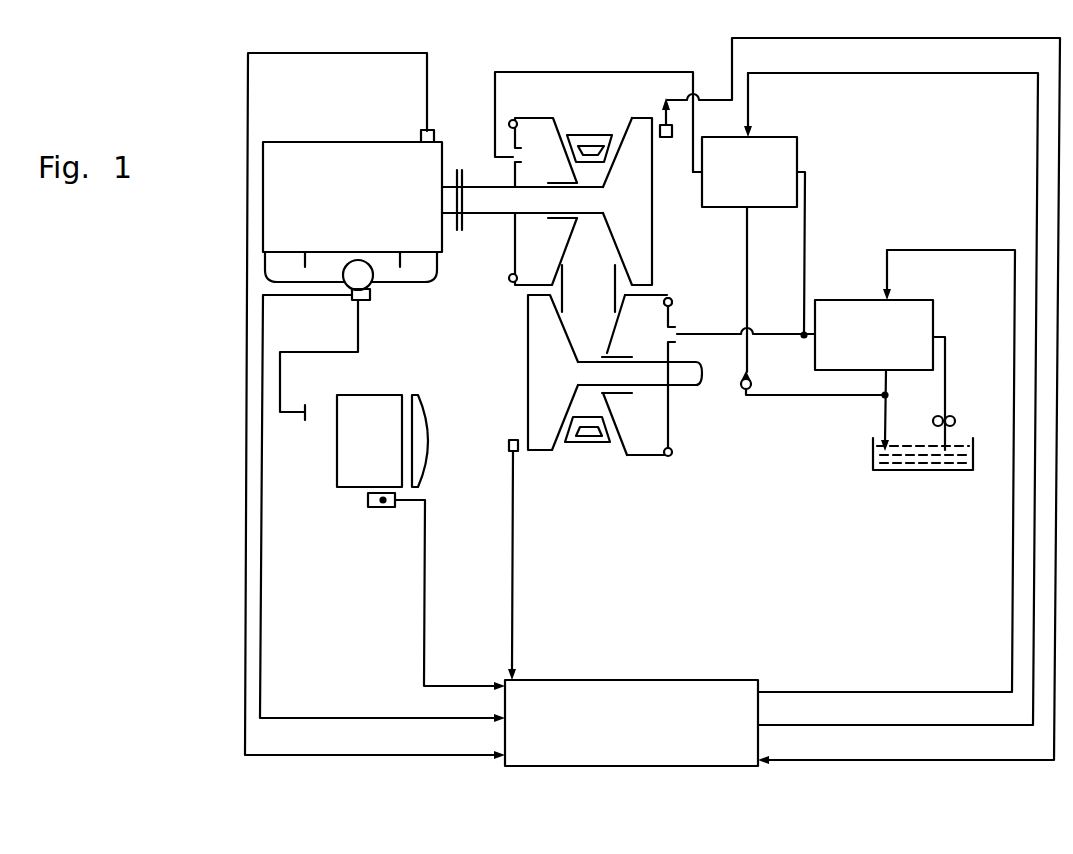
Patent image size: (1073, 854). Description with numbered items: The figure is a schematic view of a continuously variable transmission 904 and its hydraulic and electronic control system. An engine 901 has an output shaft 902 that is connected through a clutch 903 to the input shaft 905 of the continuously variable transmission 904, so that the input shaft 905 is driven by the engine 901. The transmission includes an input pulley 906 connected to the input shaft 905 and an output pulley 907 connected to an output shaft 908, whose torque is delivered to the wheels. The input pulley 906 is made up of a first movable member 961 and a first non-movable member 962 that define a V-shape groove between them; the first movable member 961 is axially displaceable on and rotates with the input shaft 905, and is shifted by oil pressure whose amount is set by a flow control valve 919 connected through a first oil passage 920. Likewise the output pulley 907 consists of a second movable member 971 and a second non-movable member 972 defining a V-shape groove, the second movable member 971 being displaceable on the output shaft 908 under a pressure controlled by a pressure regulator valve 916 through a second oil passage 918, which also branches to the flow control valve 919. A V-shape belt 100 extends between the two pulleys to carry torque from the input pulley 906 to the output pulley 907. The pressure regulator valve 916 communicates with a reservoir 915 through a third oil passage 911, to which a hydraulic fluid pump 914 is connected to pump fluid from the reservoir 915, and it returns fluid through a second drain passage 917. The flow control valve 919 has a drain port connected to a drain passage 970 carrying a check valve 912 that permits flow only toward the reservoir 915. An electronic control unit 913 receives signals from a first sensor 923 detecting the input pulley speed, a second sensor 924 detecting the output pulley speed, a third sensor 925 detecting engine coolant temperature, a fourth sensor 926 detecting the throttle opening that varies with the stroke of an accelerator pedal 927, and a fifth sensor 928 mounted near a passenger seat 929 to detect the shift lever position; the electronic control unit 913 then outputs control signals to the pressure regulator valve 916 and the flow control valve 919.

The V-shape belt 100 is at (580, 137).
The engine 901 is at (327, 157).
The output shaft 902 is at (447, 205).
The clutch 903 is at (463, 175).
The continuously variable transmission 904 is at (583, 453).
The input shaft 905 is at (488, 213).
The input pulley 906 is at (624, 130).
The output pulley 907 is at (618, 456).
The output shaft 908 is at (684, 380).
The third oil passage 911 is at (958, 345).
The check valve 912 is at (746, 390).
The electronic control unit 913 is at (682, 693).
The hydraulic fluid pump 914 is at (955, 421).
The reservoir 915 is at (973, 455).
The pressure regulator valve 916 is at (927, 298).
The second drain passage 917 is at (884, 383).
The second oil passage 918 is at (805, 233).
The flow control valve 919 is at (797, 152).
The first oil passage 920 is at (645, 72).
The first sensor 923 is at (662, 140).
The second sensor 924 is at (508, 443).
The third sensor 925 is at (421, 133).
The fourth sensor 926 is at (352, 304).
The accelerator pedal 927 is at (306, 415).
The fifth sensor 928 is at (383, 507).
The passenger seat 929 is at (355, 403).
The first movable member 961 is at (535, 130).
The first non-movable member 962 is at (653, 260).
The drain passage 970 is at (748, 302).
The second movable member 971 is at (648, 454).
The second non-movable member 972 is at (545, 437).